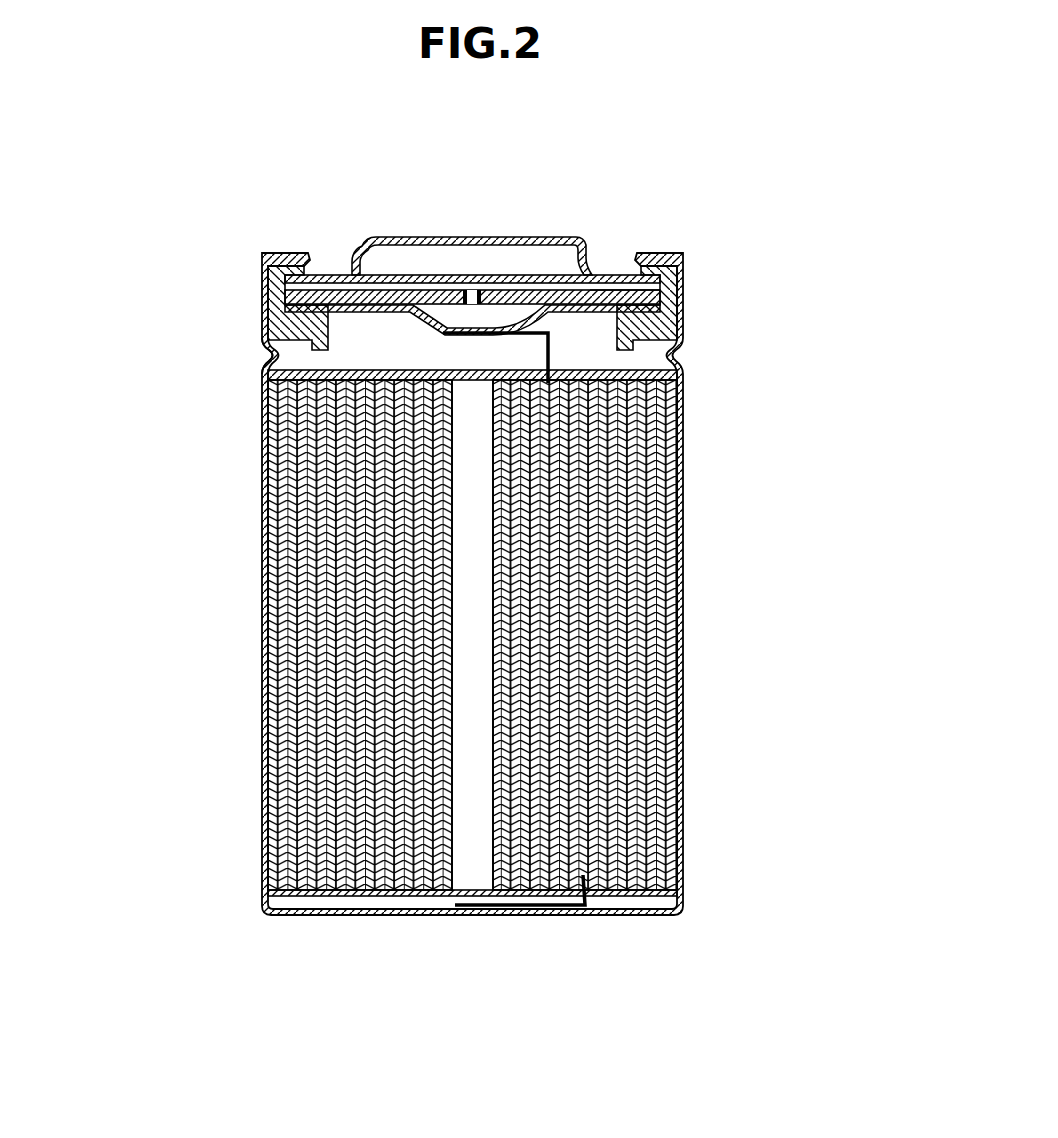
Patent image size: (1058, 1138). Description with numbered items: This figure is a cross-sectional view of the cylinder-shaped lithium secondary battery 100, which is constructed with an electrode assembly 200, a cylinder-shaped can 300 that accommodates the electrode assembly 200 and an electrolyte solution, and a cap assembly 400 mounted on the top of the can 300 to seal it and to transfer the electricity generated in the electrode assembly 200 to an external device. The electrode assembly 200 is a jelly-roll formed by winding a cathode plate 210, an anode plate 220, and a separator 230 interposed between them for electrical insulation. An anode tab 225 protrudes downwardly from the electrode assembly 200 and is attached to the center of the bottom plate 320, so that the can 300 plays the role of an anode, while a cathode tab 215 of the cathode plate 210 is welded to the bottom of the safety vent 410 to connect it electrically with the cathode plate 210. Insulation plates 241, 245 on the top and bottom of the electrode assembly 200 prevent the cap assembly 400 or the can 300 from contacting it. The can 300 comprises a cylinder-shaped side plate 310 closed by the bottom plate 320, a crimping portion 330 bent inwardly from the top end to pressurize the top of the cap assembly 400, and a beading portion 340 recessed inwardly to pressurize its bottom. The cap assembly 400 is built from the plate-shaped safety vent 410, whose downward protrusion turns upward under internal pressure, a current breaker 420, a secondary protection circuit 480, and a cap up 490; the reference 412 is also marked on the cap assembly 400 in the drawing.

The lithium secondary battery 100 is at (715, 218).
The electrode assembly 200 is at (814, 355).
The cathode plate 210 is at (680, 497).
The cathode tab 215 is at (680, 353).
The anode plate 220 is at (680, 418).
The anode tab 225 is at (575, 915).
The separator 230 is at (672, 464).
The insulation plate 241 is at (665, 372).
The insulation plate 245 is at (667, 902).
The cylinder-shaped can 300 is at (128, 326).
The cylinder-shaped side plate 310 is at (262, 414).
The bottom plate 320 is at (300, 916).
The crimping portion 330 is at (268, 255).
The beading portion 340 is at (272, 352).
The cap assembly 400 is at (590, 153).
The safety vent 410 is at (400, 283).
The notch 412 is at (598, 300).
The current breaker 420 is at (547, 283).
The secondary protection circuit 480 is at (578, 240).
The cap up 490 is at (383, 237).